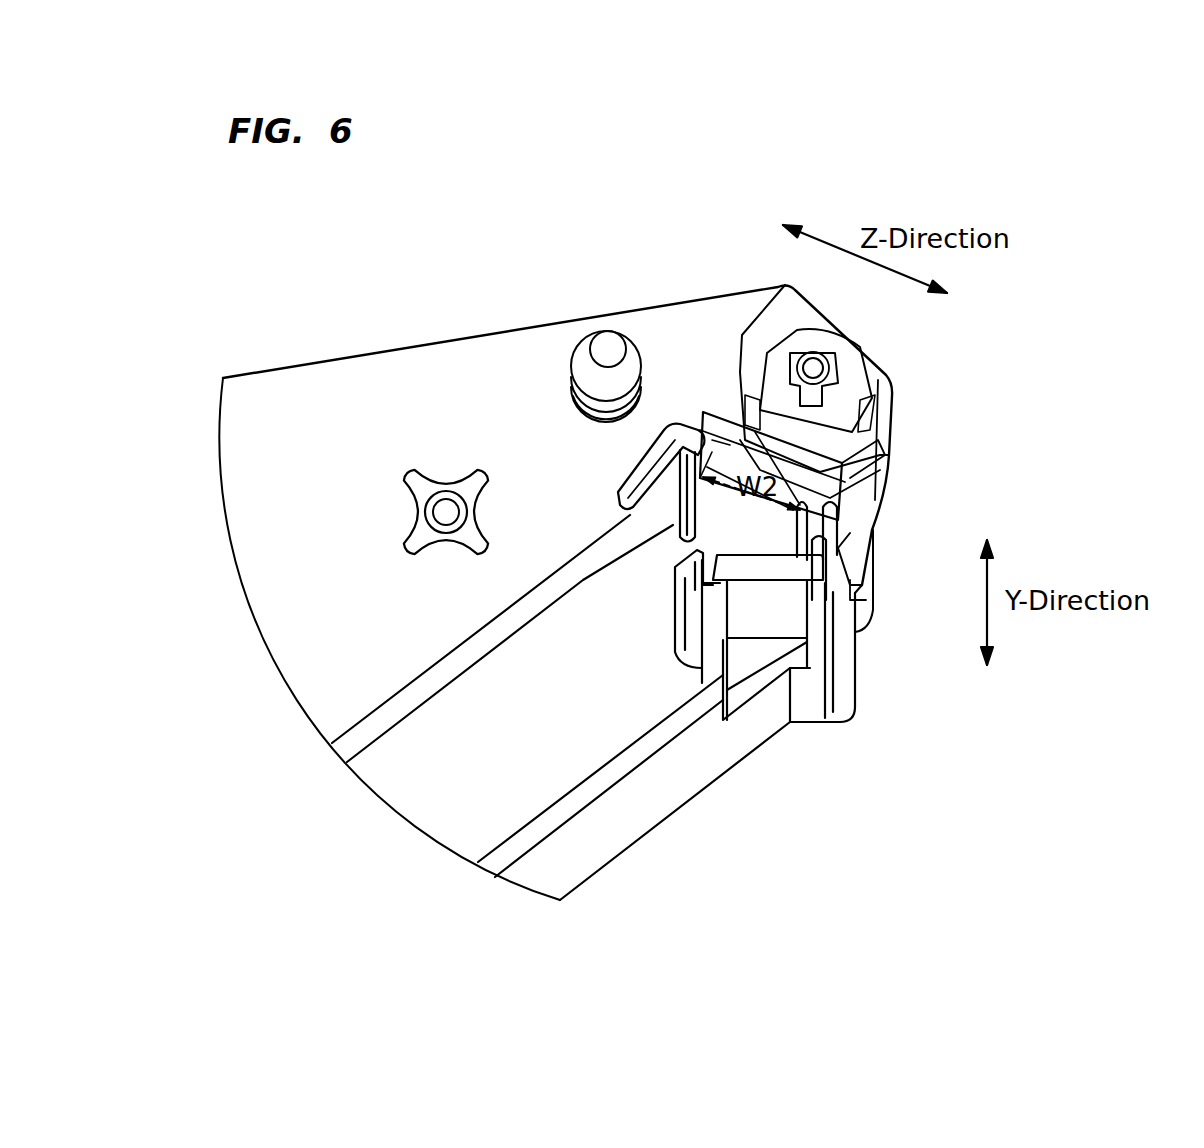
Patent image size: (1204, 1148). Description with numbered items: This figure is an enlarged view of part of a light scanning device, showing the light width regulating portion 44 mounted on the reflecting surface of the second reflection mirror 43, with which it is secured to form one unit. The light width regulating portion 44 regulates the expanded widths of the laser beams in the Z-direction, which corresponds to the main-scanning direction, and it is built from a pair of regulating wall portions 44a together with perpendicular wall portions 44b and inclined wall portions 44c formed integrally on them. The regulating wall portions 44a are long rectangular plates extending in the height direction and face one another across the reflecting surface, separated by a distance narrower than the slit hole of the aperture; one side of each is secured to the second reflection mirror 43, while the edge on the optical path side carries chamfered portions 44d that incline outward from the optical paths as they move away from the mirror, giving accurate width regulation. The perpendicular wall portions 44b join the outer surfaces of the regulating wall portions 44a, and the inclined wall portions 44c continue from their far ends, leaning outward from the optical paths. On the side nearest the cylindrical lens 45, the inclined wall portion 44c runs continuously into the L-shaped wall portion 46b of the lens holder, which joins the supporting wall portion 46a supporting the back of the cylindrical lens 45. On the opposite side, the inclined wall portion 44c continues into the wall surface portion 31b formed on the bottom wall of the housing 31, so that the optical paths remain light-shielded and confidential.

The housing 31 is at (333, 362).
The wall surface portion 31b is at (527, 610).
The second reflection mirror 43 is at (805, 462).
The light width regulating portion 44 is at (643, 436).
The regulating wall portions 44a is at (800, 505).
The perpendicular wall portions 44b is at (712, 440).
The inclined wall portions 44c is at (640, 472).
The chamfered portions 44d is at (690, 512).
The cylindrical lens 45 is at (780, 662).
The supporting wall portion 46a is at (720, 583).
The L-shaped wall portion 46b is at (688, 577).